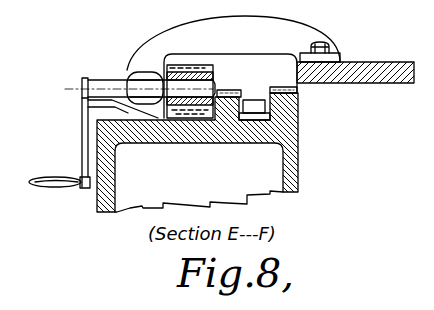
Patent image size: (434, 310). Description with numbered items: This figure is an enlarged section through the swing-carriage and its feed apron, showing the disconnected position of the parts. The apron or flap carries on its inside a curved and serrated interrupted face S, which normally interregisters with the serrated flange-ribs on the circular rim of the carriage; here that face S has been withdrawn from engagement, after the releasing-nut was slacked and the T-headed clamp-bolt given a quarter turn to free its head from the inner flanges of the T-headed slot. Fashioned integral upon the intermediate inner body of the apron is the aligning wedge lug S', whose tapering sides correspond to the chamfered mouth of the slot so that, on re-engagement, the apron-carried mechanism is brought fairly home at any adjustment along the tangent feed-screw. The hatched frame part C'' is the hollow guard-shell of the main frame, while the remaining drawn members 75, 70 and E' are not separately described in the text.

The arched cover 75 is at (221, 42).
The shaft with knob 70 is at (214, 67).
The arm E' is at (124, 111).
The serrated inner interrupted face S is at (257, 87).
The aligning wedge lug S' is at (254, 108).
The hollow cylindrical guard-shell C'' is at (355, 77).